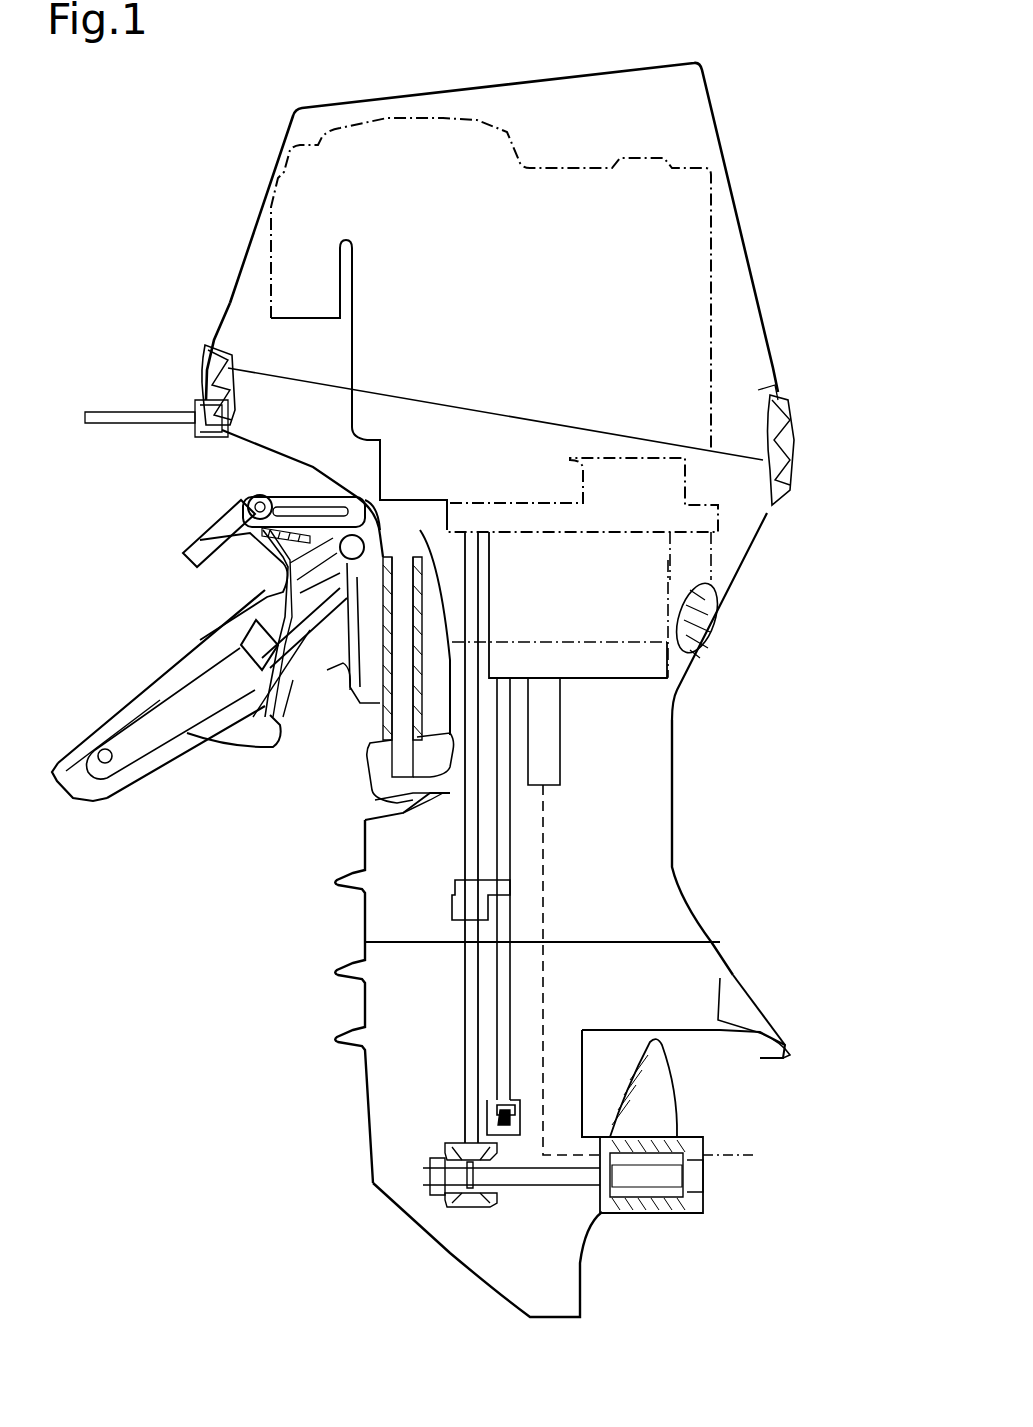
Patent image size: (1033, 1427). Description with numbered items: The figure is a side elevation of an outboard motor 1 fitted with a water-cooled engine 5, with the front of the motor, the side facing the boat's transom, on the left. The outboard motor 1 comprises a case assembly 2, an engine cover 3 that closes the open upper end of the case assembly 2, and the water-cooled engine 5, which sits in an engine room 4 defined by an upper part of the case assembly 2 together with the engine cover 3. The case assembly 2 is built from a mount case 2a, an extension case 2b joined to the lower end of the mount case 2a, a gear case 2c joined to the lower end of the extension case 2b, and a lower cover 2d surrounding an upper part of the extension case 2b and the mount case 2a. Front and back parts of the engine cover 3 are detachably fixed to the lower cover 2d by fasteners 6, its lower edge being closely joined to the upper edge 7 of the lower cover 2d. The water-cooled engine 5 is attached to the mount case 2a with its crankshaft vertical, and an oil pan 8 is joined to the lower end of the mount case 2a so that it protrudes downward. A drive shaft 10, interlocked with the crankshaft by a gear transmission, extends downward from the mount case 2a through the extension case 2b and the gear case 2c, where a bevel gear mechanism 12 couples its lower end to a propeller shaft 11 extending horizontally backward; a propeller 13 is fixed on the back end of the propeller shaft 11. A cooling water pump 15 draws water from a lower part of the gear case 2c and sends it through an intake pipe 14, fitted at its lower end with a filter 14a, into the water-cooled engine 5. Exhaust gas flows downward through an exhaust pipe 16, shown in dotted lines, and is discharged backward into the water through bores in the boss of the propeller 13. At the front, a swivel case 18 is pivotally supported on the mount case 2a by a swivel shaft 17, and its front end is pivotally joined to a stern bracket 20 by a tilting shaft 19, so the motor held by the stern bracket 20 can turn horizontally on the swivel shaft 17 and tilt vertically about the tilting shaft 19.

The outboard motor 1 is at (205, 242).
The case assembly 2 is at (820, 587).
The mount case 2a is at (715, 525).
The extension case 2b is at (673, 720).
The gear case 2c is at (707, 962).
The lower cover 2d is at (718, 618).
The engine cover 3 is at (753, 283).
The engine room 4 is at (741, 305).
The water-cooled engine 5 is at (713, 240).
The fasteners 6 is at (197, 360).
The upper edge 7 is at (518, 420).
The oil pan 8 is at (610, 682).
The drive shaft 10 is at (470, 850).
The propeller shaft 11 is at (540, 1188).
The bevel gear mechanism 12 is at (483, 1207).
The propeller 13 is at (658, 1080).
The intake pipe 14 is at (512, 846).
The filter 14a is at (492, 1125).
The cooling water pump 15 is at (453, 908).
The exhaust pipe 16 is at (555, 770).
The swivel shaft 17 is at (368, 712).
The swivel case 18 is at (343, 665).
The tilting shaft 19 is at (240, 495).
The stern bracket 20 is at (188, 655).